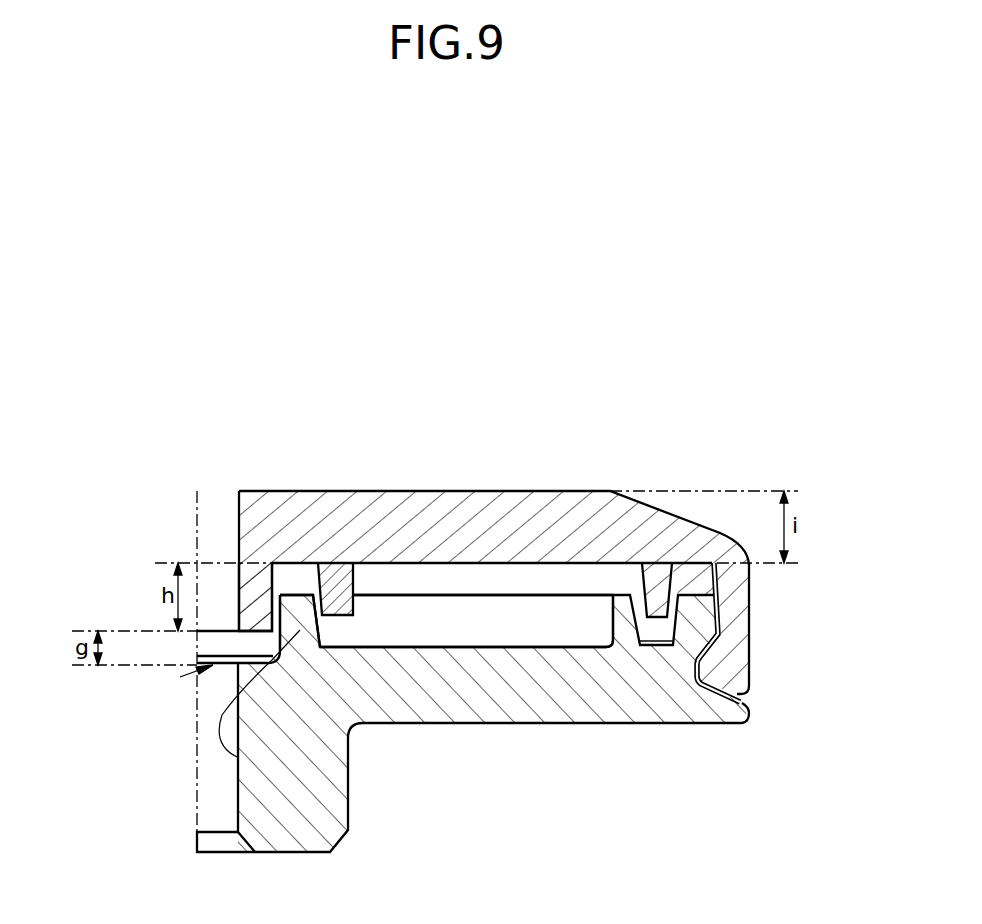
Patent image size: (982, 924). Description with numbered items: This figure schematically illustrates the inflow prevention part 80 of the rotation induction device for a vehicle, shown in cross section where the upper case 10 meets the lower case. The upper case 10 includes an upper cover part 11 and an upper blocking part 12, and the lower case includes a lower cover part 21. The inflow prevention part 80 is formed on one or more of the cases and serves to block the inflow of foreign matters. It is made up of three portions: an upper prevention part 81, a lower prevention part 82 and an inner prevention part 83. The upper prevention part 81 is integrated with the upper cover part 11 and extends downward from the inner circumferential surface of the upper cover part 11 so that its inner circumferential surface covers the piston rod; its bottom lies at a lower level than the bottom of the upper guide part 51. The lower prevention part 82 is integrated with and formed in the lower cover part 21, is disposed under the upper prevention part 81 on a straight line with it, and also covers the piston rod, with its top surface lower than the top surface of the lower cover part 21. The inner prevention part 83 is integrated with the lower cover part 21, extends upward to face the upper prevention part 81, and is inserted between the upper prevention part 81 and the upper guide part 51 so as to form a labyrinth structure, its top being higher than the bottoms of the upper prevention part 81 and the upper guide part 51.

The upper case 10 is at (473, 528).
The upper cover part 11 is at (470, 522).
The upper blocking part 12 is at (732, 617).
The lower cover part 21 is at (527, 728).
The upper guide part 51 is at (357, 603).
The inflow prevention part 80 is at (488, 425).
The upper prevention part 81 is at (257, 602).
The lower prevention part 82 is at (318, 605).
The inner prevention part 83 is at (298, 613).